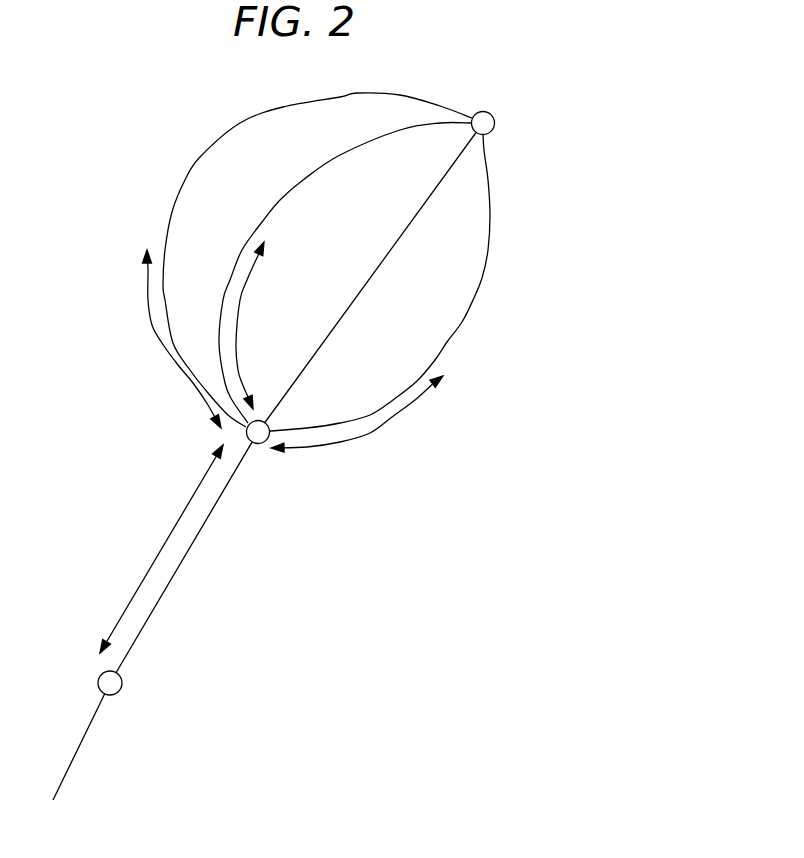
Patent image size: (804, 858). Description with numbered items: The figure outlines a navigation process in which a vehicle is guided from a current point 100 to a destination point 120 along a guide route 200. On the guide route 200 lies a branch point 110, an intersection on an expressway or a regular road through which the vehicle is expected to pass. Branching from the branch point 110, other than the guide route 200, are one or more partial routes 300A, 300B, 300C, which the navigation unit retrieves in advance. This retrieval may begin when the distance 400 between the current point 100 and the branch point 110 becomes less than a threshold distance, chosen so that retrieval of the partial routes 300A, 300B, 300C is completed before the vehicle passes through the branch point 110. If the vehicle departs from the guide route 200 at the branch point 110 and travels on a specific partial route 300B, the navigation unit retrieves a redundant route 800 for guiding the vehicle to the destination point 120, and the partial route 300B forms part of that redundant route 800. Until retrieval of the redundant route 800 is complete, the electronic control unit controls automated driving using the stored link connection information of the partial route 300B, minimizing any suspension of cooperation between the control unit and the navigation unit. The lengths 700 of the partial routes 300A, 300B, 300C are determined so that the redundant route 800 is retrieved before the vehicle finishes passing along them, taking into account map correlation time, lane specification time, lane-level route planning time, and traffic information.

The current point 100 is at (122, 688).
The branch point 110 is at (265, 445).
The destination point 120 is at (495, 128).
The guide route 200 is at (358, 293).
The partial route 300A is at (357, 417).
The partial route 300B is at (222, 298).
The partial route 300C is at (163, 290).
The distance 400 is at (162, 543).
The length 700 is at (162, 343).
The redundant route 800 is at (303, 180).